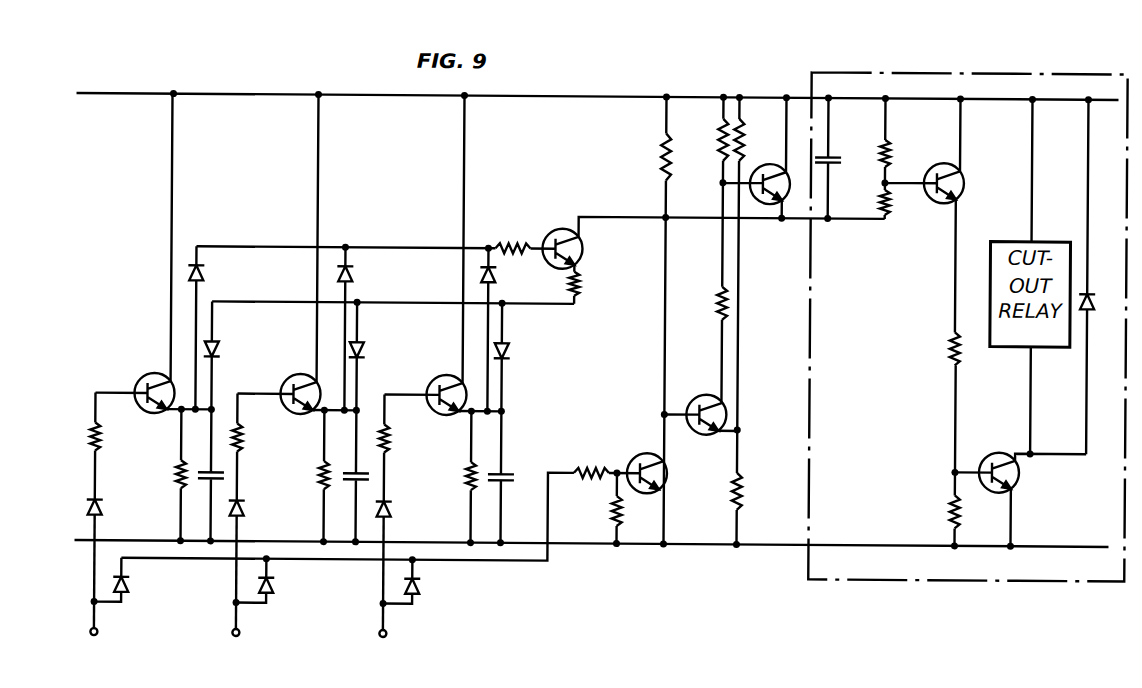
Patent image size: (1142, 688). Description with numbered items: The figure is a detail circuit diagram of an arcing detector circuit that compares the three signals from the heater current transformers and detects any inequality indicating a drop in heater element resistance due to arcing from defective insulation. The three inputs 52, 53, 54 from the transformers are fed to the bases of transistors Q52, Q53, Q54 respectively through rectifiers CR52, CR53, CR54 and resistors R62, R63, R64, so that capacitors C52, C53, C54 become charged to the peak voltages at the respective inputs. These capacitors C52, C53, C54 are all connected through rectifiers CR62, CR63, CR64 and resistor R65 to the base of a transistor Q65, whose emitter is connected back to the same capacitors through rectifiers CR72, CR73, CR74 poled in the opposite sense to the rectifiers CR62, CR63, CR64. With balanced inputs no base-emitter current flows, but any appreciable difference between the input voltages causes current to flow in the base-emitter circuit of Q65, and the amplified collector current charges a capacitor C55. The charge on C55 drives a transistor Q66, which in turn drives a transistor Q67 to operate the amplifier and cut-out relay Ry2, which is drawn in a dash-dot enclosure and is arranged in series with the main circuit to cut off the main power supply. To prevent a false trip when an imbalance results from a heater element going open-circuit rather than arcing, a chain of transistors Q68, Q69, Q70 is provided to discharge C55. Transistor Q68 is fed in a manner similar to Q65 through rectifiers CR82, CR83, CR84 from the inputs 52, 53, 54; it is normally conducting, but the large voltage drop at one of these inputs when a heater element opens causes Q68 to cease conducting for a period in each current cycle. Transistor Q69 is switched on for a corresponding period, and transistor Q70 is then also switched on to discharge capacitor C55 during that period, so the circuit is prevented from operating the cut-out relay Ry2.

The transistor Q52 is at (148, 378).
The transistor Q53 is at (291, 378).
The transistor Q54 is at (440, 380).
The transistor Q65 is at (561, 229).
The transistor Q66 is at (965, 182).
The transistor Q67 is at (1019, 482).
The transistor Q68 is at (668, 476).
The transistor Q69 is at (703, 393).
The transistor Q70 is at (767, 203).
The resistor R62 is at (103, 446).
The resistor R63 is at (245, 446).
The resistor R64 is at (391, 445).
The resistor R65 is at (496, 247).
The capacitor C52 is at (202, 474).
The capacitor C53 is at (347, 474).
The capacitor C54 is at (505, 478).
The capacitor C55 is at (834, 152).
The rectifier CR52 is at (104, 510).
The rectifier CR53 is at (246, 510).
The rectifier CR54 is at (411, 565).
The rectifier CR62 is at (200, 272).
The rectifier CR63 is at (349, 272).
The rectifier CR64 is at (492, 276).
The rectifier CR72 is at (224, 333).
The rectifier CR73 is at (361, 346).
The rectifier CR74 is at (506, 346).
The rectifier CR82 is at (130, 592).
The rectifier CR83 is at (275, 592).
The rectifier CR84 is at (421, 592).
The input 52 is at (99, 636).
The input 53 is at (241, 636).
The input 54 is at (388, 636).
The amplifier and cut-out relay Ry2 is at (910, 71).